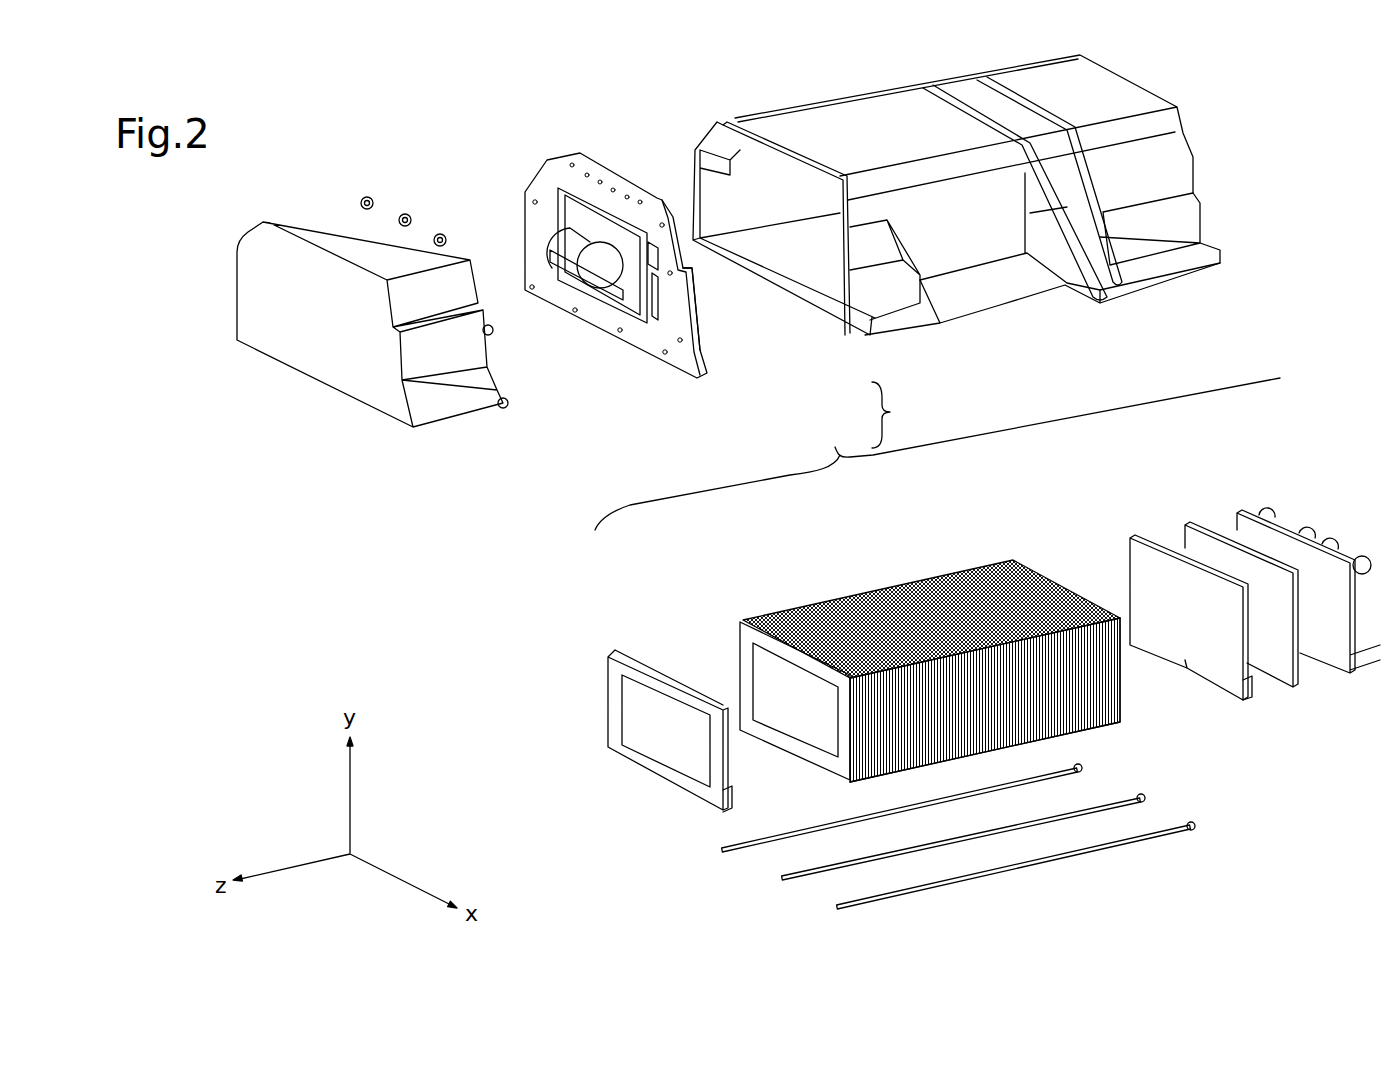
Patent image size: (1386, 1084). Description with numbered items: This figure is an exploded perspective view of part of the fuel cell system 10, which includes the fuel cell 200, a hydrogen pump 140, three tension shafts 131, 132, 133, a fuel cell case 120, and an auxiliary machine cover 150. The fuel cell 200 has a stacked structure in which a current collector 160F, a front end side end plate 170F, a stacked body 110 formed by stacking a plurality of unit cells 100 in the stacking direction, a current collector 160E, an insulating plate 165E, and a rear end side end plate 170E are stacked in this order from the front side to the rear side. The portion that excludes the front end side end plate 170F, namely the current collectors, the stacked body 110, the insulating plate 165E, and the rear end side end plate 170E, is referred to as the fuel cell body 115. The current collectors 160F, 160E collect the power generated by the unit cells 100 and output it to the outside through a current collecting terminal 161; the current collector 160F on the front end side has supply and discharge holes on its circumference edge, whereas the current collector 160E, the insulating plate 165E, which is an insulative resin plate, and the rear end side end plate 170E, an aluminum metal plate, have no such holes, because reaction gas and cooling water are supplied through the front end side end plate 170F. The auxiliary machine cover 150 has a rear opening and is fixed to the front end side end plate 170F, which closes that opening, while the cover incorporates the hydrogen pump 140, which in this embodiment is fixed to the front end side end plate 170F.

The fuel cell system 10 is at (1283, 89).
The unit cell 100 is at (877, 588).
The stacked body 110 is at (746, 561).
The fuel cell body 115 is at (937, 454).
The fuel cell case 120 is at (1133, 84).
The tension shaft 131 is at (780, 880).
The tension shaft 132 is at (720, 852).
The tension shaft 133 is at (835, 908).
The hydrogen pump 140 is at (570, 233).
The auxiliary machine cover 150 is at (320, 222).
The current collector 160F is at (617, 647).
The current collector 160E is at (1142, 537).
The current collecting terminal 161 is at (737, 783).
The insulating plate 165E is at (1190, 527).
The front end side end plate 170F is at (700, 340).
The rear end side end plate 170E is at (1243, 513).
The fuel cell 200 is at (901, 415).